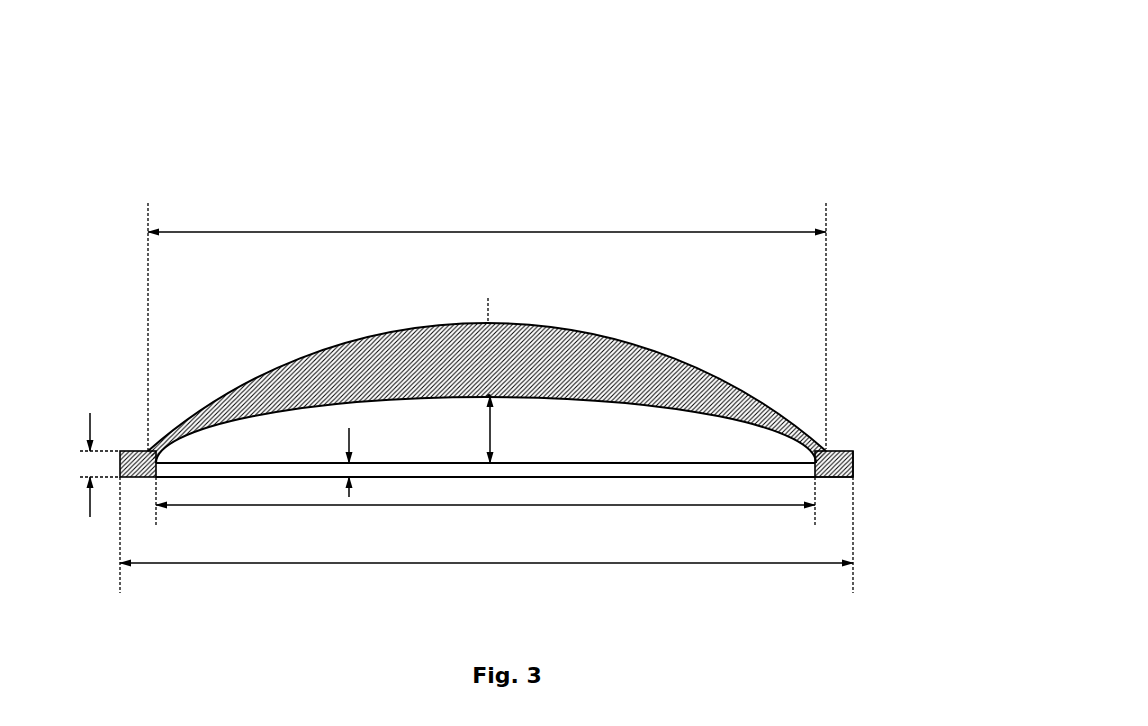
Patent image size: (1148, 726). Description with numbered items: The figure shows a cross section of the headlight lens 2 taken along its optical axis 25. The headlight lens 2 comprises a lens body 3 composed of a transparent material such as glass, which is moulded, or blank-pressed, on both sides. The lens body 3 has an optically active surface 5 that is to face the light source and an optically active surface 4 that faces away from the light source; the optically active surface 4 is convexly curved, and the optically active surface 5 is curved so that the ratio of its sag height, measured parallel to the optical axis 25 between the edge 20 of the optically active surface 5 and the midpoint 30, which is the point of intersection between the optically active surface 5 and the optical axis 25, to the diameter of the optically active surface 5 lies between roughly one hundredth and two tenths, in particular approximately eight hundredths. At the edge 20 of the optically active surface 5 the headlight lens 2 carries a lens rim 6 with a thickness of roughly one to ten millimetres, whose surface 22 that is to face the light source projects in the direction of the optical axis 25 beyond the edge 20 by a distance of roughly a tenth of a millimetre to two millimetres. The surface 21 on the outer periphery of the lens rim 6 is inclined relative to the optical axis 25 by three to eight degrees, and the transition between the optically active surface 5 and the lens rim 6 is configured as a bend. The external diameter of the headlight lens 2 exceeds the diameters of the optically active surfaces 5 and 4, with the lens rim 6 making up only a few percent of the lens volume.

The headlight lens 2 is at (748, 103).
The lens body 3 is at (278, 387).
The optically active surface facing away from the light source 4 is at (355, 337).
The optically active surface to face the light source 5 is at (678, 409).
The lens rim 6 is at (833, 462).
The edge of the optically active surface 20 is at (753, 463).
The surface on the outer periphery of the lens rim 21 is at (853, 458).
The surface of the lens rim to face the light source 22 is at (838, 478).
The optical axis 25 is at (488, 316).
The midpoint of the optically active surface 30 is at (489, 396).